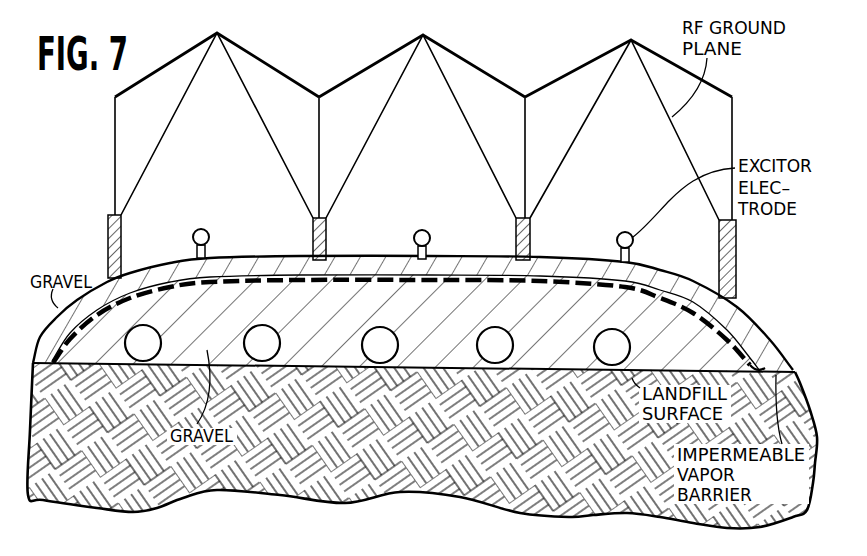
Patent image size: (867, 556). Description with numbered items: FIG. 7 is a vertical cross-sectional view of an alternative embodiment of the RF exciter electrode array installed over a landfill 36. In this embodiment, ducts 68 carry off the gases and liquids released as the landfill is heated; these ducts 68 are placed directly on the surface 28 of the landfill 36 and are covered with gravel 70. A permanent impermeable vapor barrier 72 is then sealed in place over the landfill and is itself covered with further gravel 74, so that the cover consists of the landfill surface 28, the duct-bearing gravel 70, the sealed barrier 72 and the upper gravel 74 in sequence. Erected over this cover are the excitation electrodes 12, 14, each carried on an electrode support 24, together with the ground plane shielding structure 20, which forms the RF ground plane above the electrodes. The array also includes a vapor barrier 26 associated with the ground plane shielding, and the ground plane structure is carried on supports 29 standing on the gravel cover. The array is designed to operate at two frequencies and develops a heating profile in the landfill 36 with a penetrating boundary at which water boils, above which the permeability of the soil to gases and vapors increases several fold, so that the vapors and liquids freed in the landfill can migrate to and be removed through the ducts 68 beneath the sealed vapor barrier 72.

The electrode 12 is at (203, 229).
The electrode 14 is at (424, 230).
The ground plane shielding structure 20 is at (684, 146).
The electrode support 24 is at (206, 250).
The vapor barrier 26 is at (163, 66).
The surface of the landfill 28 is at (100, 372).
The ground plane support post 29 is at (108, 242).
The landfill 36 is at (352, 453).
The ducts 68 is at (140, 361).
The gravel 70 is at (757, 352).
The permanent impermeable vapor barrier 72 is at (737, 325).
The further gravel 74 is at (770, 364).